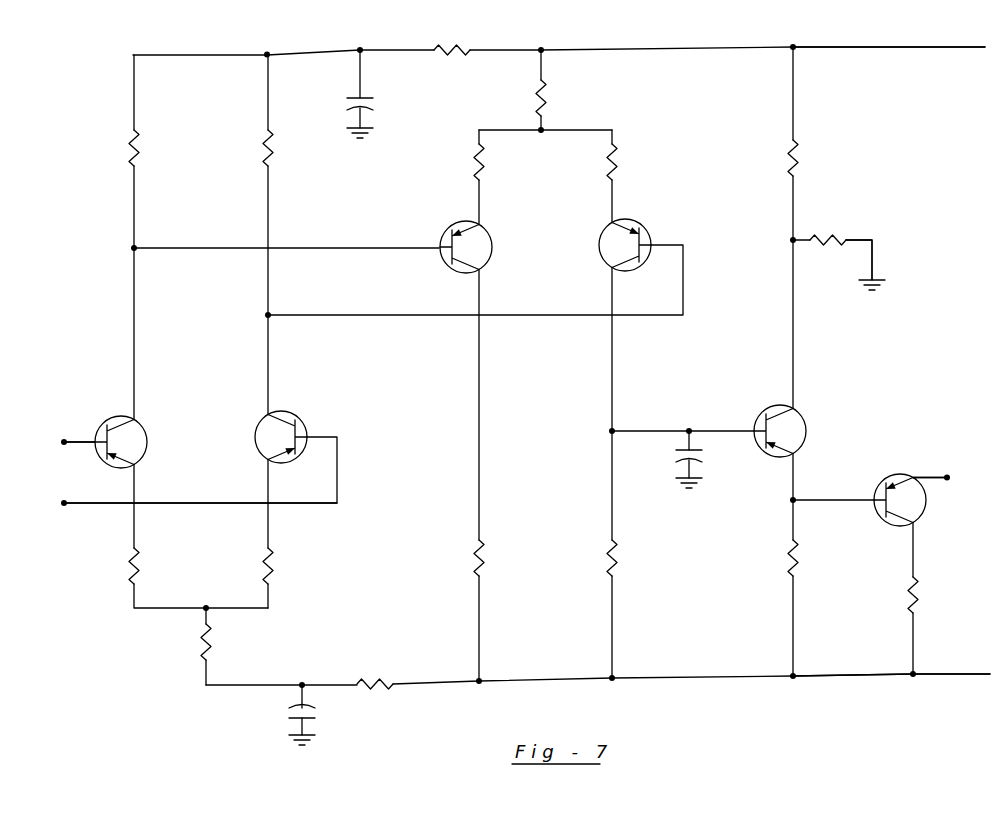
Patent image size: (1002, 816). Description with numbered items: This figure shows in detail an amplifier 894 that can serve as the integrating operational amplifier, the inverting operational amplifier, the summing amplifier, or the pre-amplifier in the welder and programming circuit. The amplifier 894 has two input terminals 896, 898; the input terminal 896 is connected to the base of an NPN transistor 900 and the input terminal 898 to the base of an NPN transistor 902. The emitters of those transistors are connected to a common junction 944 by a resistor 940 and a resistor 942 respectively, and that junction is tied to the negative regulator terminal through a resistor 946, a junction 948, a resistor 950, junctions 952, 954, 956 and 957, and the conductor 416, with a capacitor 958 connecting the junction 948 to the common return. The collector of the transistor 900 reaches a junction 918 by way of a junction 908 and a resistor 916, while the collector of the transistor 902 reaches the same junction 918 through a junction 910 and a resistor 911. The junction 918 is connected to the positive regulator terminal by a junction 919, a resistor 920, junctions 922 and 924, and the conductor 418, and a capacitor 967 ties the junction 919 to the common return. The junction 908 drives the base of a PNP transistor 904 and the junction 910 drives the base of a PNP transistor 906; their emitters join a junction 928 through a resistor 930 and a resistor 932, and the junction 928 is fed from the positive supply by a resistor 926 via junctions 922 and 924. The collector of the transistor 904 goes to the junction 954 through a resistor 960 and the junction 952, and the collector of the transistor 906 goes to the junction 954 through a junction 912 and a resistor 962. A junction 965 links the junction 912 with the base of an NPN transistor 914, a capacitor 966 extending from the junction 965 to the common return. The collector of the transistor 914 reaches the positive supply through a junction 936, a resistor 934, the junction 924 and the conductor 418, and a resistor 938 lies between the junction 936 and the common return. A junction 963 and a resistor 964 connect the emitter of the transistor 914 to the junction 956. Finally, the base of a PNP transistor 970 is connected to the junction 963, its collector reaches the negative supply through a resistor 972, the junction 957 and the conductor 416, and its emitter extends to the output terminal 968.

The amplifier 894 is at (96, 246).
The input terminal 896 is at (64, 440).
The input terminal 898 is at (64, 505).
The NPN transistor 900 is at (127, 418).
The NPN transistor 902 is at (302, 414).
The PNP transistor 904 is at (468, 221).
The PNP transistor 906 is at (641, 223).
The junction 908 is at (137, 247).
The junction 910 is at (272, 314).
The resistor 911 is at (274, 147).
The junction 912 is at (615, 430).
The NPN transistor 914 is at (803, 414).
The resistor 916 is at (128, 147).
The junction 918 is at (267, 55).
The junction 919 is at (360, 50).
The resistor 920 is at (455, 50).
The junction 922 is at (541, 50).
The junction 924 is at (793, 47).
The resistor 926 is at (548, 97).
The junction 928 is at (541, 131).
The resistor 930 is at (472, 155).
The resistor 932 is at (618, 152).
The resistor 934 is at (803, 158).
The junction 936 is at (790, 243).
The resistor 938 is at (830, 238).
The resistor 940 is at (128, 562).
The resistor 942 is at (282, 560).
The junction 944 is at (208, 607).
The resistor 946 is at (200, 652).
The junction 948 is at (302, 684).
The resistor 950 is at (378, 682).
The junction 952 is at (481, 680).
The junction 954 is at (614, 677).
The junction 956 is at (796, 676).
The junction 957 is at (912, 678).
The capacitor 958 is at (290, 712).
The resistor 960 is at (490, 560).
The resistor 962 is at (622, 560).
The junction 963 is at (791, 501).
The resistor 964 is at (804, 557).
The junction 965 is at (690, 430).
The capacitor 966 is at (703, 459).
The capacitor 967 is at (373, 101).
The output terminal 968 is at (952, 458).
The PNP transistor 970 is at (891, 478).
The resistor 972 is at (920, 592).
The conductor 416 is at (975, 648).
The conductor 418 is at (961, 48).